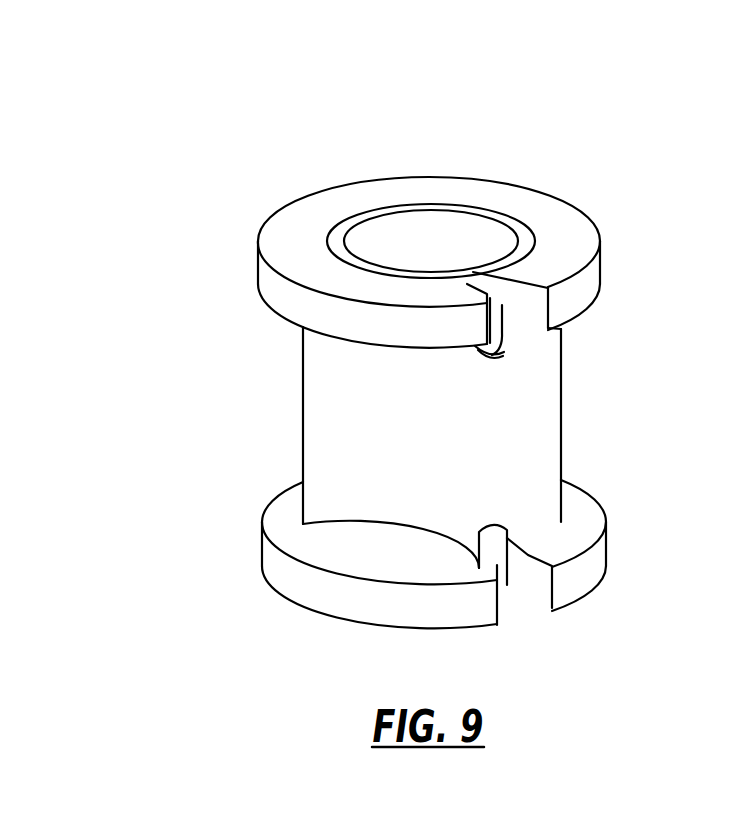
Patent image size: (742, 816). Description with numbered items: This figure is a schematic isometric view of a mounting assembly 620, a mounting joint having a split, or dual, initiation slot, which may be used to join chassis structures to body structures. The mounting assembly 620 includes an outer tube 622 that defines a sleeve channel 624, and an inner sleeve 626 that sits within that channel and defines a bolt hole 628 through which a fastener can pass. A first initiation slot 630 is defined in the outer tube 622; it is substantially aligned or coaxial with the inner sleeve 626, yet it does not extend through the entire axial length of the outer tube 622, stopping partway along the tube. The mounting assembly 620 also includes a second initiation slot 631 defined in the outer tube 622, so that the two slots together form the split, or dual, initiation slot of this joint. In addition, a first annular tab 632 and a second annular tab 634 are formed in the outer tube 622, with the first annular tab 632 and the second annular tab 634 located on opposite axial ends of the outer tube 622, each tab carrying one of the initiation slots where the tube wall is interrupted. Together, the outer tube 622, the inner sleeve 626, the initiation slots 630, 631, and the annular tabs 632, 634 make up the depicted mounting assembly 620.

The mounting assembly 620 is at (621, 99).
The outer tube 622 is at (532, 438).
The sleeve channel 624 is at (340, 220).
The inner sleeve 626 is at (509, 223).
The bolt hole 628 is at (413, 222).
The first initiation slot 630 is at (511, 300).
The second initiation slot 631 is at (497, 588).
The first annular tab 632 is at (578, 290).
The second annular tab 634 is at (280, 565).